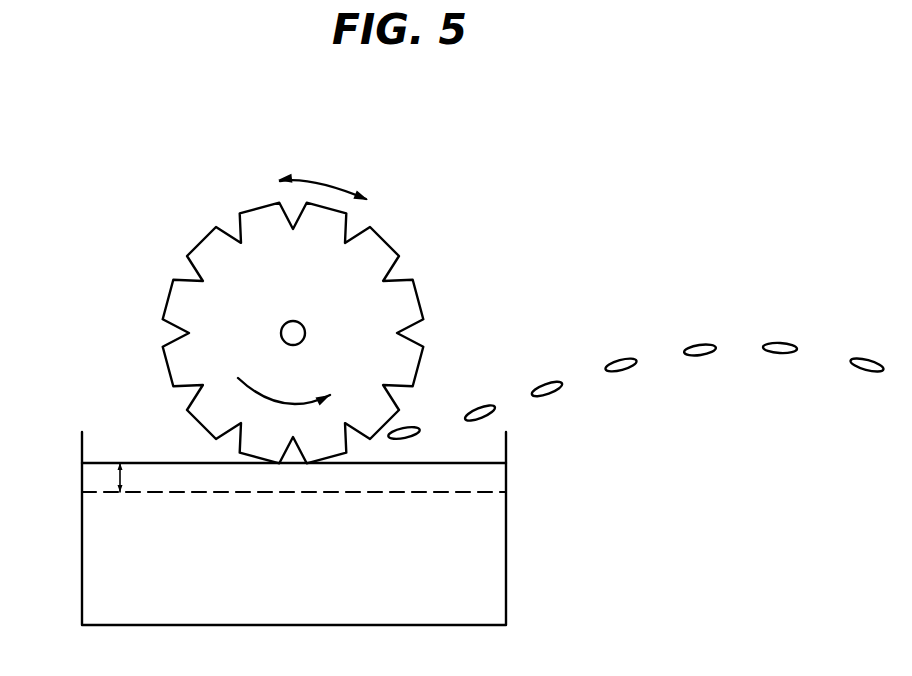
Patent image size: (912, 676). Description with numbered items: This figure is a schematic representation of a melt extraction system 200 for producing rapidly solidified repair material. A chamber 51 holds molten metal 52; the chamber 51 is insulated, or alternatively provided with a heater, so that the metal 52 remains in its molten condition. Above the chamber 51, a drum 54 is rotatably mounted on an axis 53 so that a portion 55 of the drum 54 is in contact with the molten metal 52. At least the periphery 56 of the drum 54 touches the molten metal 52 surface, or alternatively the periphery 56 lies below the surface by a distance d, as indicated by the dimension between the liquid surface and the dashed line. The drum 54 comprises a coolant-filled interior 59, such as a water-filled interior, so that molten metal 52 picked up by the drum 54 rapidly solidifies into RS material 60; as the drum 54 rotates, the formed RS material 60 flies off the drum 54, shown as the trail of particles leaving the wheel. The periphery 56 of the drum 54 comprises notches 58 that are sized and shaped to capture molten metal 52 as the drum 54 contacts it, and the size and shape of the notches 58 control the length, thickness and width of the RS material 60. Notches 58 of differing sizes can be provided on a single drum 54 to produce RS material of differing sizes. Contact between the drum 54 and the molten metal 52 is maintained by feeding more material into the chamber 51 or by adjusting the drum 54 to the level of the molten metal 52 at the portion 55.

The melt extraction system 200 is at (645, 177).
The drum 54 is at (400, 244).
The coolant-filled interior 59 is at (285, 301).
The axis 53 is at (305, 333).
The notches 58 is at (187, 273).
The periphery 56 is at (333, 180).
The portion 55 is at (277, 445).
The RS material 60 is at (627, 366).
The chamber 51 is at (507, 572).
The molten metal 52 is at (339, 567).
The distance d is at (113, 478).